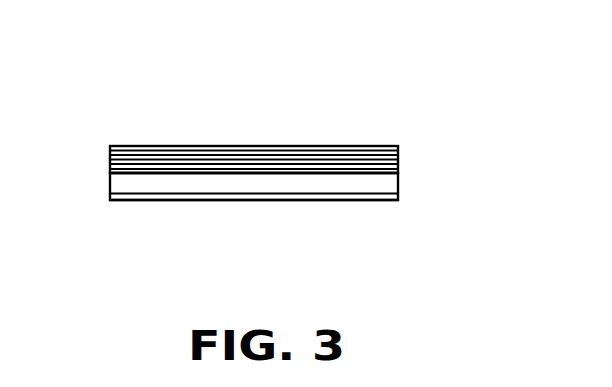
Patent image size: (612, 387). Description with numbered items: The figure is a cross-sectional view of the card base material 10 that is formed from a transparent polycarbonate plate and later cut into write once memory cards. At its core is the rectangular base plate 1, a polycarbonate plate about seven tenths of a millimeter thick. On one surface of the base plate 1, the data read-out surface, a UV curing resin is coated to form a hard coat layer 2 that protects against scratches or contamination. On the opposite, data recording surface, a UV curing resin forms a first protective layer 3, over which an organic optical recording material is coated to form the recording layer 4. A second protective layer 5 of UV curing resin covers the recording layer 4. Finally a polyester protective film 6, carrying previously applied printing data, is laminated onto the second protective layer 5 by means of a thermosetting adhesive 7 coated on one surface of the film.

The card base material 10 is at (108, 129).
The rectangular base plate 1 is at (122, 182).
The hard coat layer 2 is at (236, 201).
The first protective layer 3 is at (310, 173).
The recording layer 4 is at (392, 173).
The second protective layer 5 is at (322, 160).
The protective film 6 is at (177, 147).
The thermosetting adhesive 7 is at (239, 148).